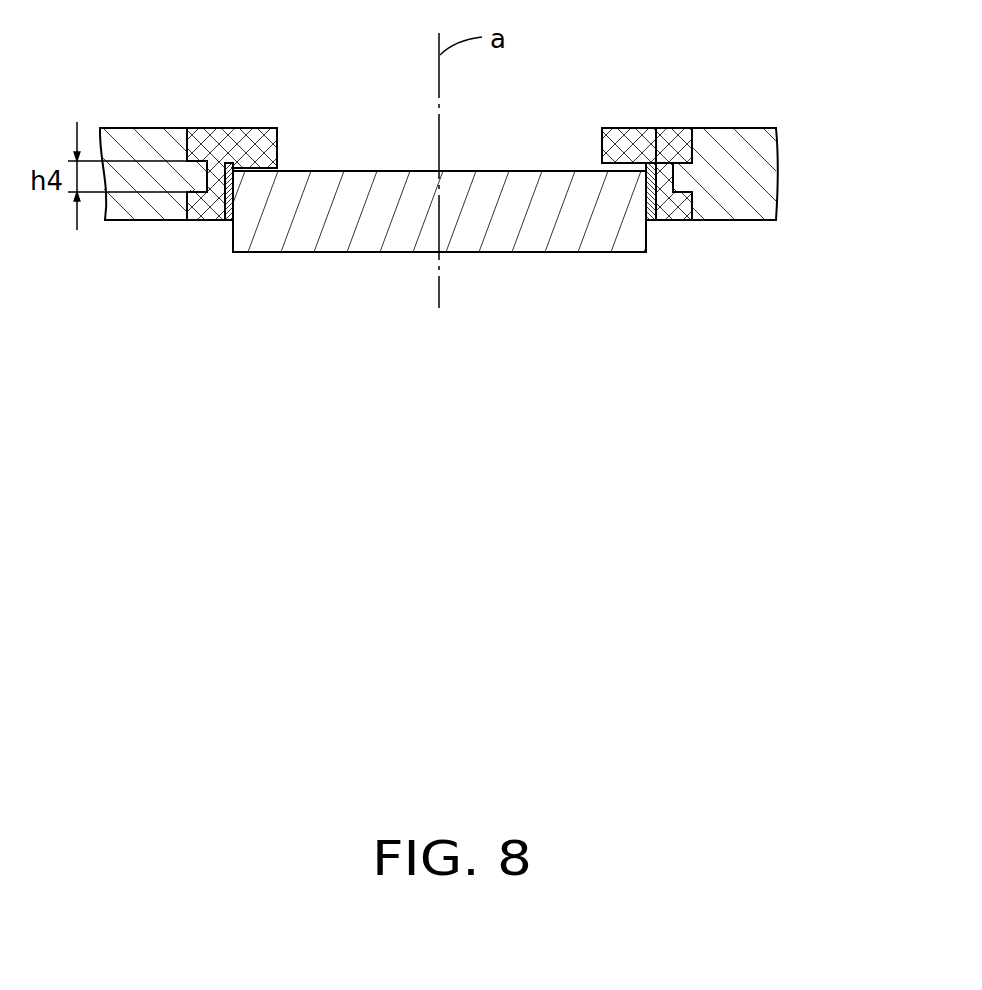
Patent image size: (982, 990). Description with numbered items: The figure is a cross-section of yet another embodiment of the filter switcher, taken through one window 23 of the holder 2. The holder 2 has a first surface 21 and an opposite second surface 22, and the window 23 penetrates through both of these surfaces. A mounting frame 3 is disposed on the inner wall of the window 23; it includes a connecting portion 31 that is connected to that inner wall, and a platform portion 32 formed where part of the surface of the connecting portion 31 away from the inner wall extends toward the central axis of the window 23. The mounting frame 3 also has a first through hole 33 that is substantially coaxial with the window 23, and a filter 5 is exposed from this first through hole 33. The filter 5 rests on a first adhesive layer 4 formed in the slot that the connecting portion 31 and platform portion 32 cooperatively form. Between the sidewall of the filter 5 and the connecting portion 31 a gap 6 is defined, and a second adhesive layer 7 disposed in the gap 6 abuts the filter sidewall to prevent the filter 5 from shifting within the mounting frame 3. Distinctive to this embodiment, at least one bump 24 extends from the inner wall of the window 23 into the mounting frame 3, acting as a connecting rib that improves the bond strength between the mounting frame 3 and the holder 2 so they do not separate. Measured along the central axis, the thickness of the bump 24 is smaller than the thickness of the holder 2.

The holder 2 is at (850, 82).
The first surface 21 is at (742, 220).
The second surface 22 is at (767, 128).
The window 23 is at (693, 203).
The bump 24 is at (680, 182).
The mounting frame 3 is at (748, 78).
The connecting portion 31 is at (667, 167).
The platform portion 32 is at (645, 148).
The first through hole 33 is at (567, 147).
The first adhesive layer 4 is at (257, 167).
The filter 5 is at (525, 210).
The gap 6 is at (233, 213).
The second adhesive layer 7 is at (230, 205).